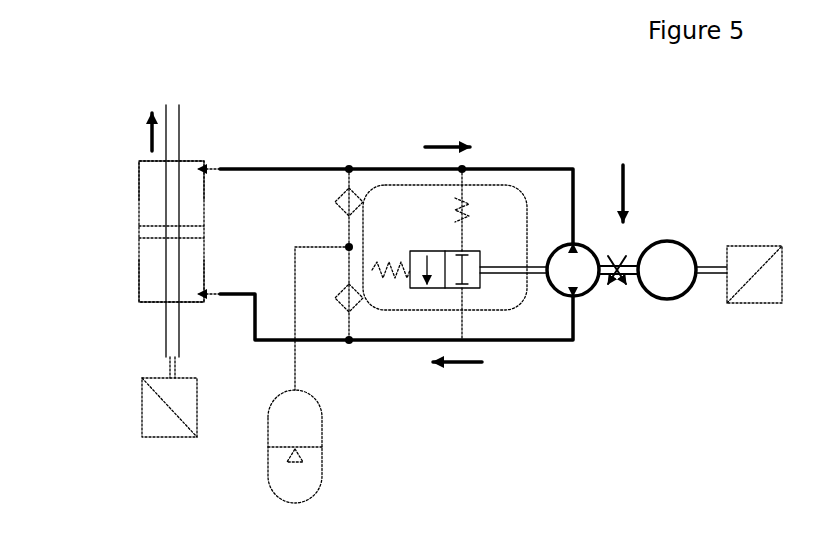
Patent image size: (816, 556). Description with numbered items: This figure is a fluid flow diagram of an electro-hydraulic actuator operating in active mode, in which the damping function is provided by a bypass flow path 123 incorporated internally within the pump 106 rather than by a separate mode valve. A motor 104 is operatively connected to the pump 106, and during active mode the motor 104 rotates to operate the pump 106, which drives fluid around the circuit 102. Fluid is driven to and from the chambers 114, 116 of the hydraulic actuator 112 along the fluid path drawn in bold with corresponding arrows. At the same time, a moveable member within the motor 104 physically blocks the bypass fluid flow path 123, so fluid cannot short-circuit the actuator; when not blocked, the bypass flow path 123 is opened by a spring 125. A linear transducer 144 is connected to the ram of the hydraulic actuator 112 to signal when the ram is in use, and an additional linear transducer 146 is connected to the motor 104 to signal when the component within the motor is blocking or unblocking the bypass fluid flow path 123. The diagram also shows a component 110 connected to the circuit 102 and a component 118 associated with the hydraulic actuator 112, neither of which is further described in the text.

The circuit 102 is at (670, 123).
The motor 104 is at (668, 253).
The pump 106 is at (553, 260).
The accumulator 110 is at (303, 437).
The hydraulic actuator 112 is at (95, 237).
The chamber 114 is at (148, 202).
The chamber 116 is at (150, 280).
The piston rod 118 is at (172, 142).
The bypass flow path 123 is at (468, 260).
The spring 125 is at (377, 267).
The linear transducer 144 is at (172, 430).
The additional linear transducer 146 is at (747, 288).